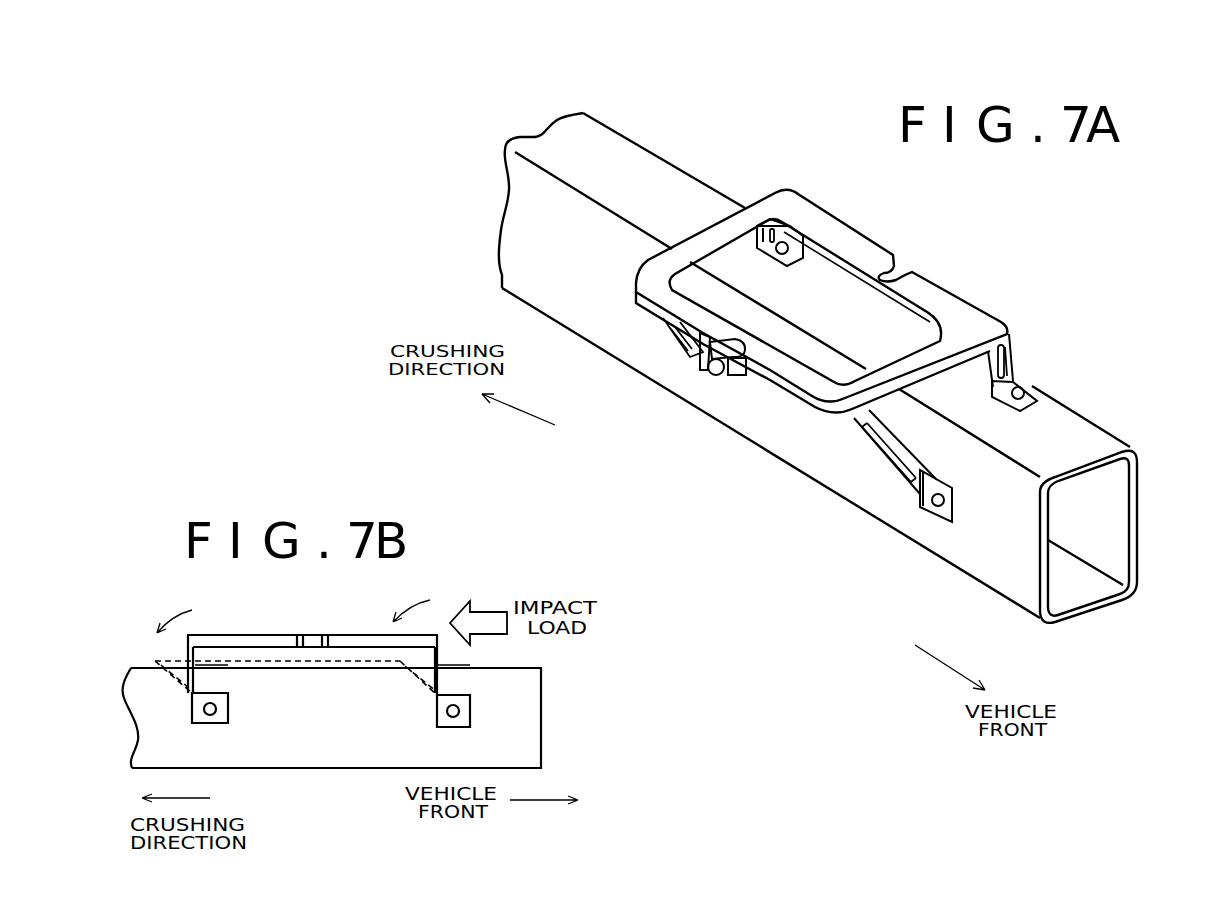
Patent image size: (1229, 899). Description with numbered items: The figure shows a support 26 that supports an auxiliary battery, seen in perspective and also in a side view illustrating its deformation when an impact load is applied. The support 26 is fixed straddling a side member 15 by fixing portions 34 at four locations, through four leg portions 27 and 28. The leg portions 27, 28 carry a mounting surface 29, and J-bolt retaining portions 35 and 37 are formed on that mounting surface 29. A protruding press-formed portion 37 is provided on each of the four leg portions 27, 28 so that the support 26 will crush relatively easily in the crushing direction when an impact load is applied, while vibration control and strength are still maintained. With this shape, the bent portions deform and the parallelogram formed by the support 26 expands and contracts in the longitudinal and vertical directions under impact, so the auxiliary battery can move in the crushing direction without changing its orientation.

The side member 15 is at (1100, 423).
The support 26 is at (781, 446).
The leg portion 27 is at (1017, 362).
The leg portion 28 is at (902, 482).
The mounting surface 29 is at (940, 300).
The fixing portion 34 is at (795, 243).
The J-bolt retaining portion 35 is at (742, 380).
The protruding press-formed portion 37 is at (772, 224).